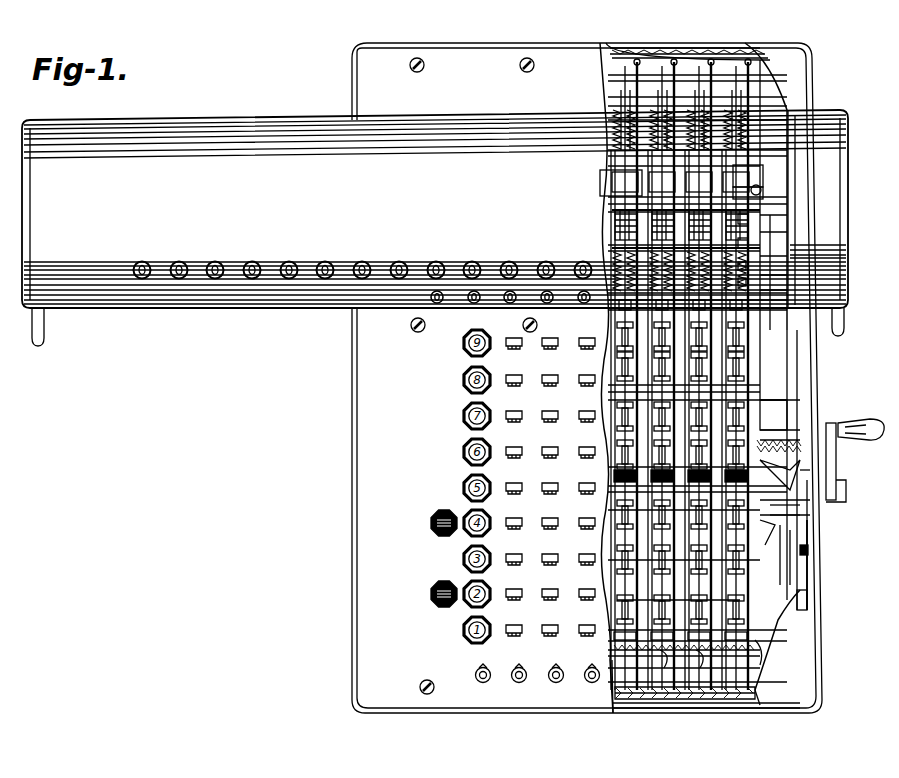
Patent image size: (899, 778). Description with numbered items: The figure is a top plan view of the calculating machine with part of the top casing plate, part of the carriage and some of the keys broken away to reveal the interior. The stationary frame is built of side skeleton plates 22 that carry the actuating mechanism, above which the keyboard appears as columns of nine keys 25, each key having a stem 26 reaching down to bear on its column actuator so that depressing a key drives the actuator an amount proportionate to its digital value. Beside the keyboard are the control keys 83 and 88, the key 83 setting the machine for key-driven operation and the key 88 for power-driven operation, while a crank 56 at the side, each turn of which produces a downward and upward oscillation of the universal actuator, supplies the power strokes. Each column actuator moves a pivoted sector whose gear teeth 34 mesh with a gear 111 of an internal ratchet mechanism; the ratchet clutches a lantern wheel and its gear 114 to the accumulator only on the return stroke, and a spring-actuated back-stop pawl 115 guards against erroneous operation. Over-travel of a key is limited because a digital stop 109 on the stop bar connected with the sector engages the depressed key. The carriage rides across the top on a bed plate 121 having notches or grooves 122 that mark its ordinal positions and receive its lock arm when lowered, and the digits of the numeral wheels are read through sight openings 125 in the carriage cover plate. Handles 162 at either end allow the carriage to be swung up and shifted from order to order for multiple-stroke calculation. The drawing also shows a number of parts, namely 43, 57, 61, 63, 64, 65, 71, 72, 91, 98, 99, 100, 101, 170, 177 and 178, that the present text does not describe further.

The side skeleton plate 22 is at (805, 605).
The key 25 is at (472, 605).
The key stem 26 is at (585, 630).
The gear teeth 34 is at (612, 248).
The setting rod 43 is at (752, 128).
The crank 56 is at (840, 478).
The lever 57 is at (790, 515).
The link 61 is at (800, 471).
The rod 63 is at (810, 571).
The arm 64 is at (780, 505).
The stud 65 is at (808, 550).
The bar 71 is at (762, 641).
The plate 72 is at (773, 415).
The key 83 is at (431, 524).
The key 88 is at (431, 595).
The rod 91 is at (742, 388).
The spring 98 is at (768, 532).
The link 99 is at (672, 656).
The link 100 is at (706, 656).
The knob 101 is at (556, 680).
The digital stop 109 is at (617, 598).
The gear 111 is at (612, 222).
The gear 114 is at (748, 219).
The back-stop pawl 115 is at (748, 243).
The bed plate 121 is at (766, 195).
The notch or groove 122 is at (748, 176).
The sight opening 125 is at (260, 251).
The handle 162 is at (44, 340).
The counter wheel 170 is at (481, 305).
The pawl 177 is at (746, 267).
The pawl 178 is at (746, 282).